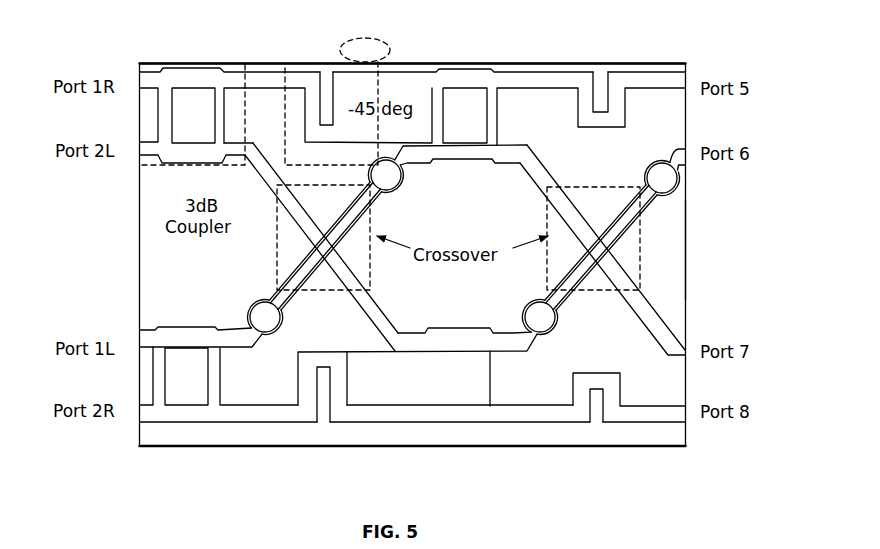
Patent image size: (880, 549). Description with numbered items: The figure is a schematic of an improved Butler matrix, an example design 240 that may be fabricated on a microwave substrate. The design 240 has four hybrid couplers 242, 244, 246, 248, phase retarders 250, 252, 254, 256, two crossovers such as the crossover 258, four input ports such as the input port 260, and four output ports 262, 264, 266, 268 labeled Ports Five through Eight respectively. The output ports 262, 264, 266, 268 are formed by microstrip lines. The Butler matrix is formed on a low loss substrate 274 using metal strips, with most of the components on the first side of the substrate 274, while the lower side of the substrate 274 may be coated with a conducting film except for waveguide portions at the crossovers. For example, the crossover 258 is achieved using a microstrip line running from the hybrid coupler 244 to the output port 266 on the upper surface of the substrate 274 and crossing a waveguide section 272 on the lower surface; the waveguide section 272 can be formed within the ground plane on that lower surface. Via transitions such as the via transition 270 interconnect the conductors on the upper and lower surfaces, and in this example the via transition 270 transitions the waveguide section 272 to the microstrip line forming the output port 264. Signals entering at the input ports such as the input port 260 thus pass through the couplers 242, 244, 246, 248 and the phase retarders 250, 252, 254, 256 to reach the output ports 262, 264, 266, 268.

The example design 240 is at (152, 55).
The hybrid coupler 242 is at (197, 76).
The hybrid coupler 244 is at (465, 77).
The hybrid coupler 246 is at (185, 418).
The hybrid coupler 248 is at (455, 415).
The phase retarder 250 is at (313, 80).
The phase retarder 252 is at (307, 412).
The phase retarder 254 is at (587, 78).
The phase retarder 256 is at (580, 413).
The crossover 258 is at (687, 243).
The input port 260 is at (140, 80).
The output port 262 is at (677, 82).
The output port 264 is at (687, 155).
The output port 266 is at (673, 327).
The output port 268 is at (674, 413).
The via transition 270 is at (663, 178).
The waveguide section 272 is at (633, 208).
The substrate 274 is at (687, 388).